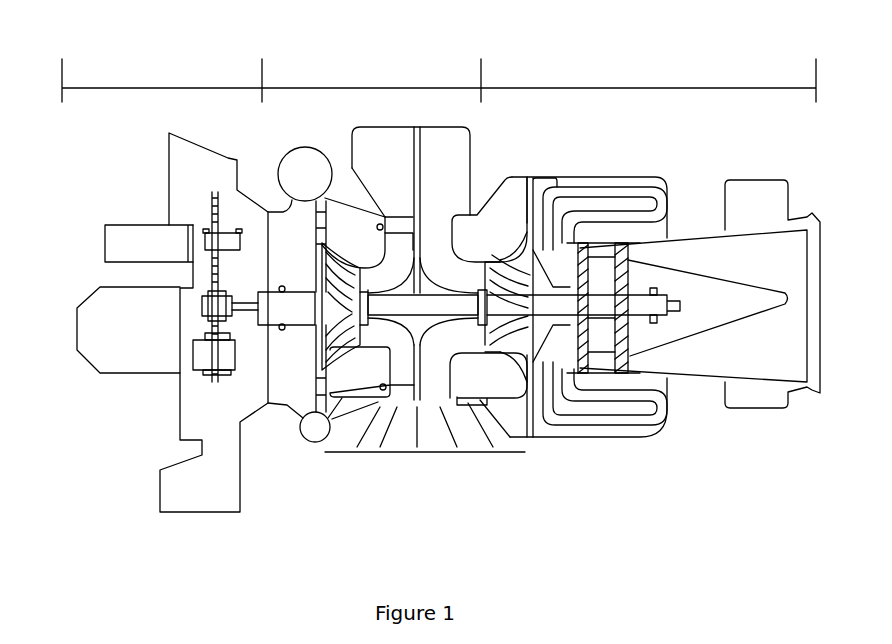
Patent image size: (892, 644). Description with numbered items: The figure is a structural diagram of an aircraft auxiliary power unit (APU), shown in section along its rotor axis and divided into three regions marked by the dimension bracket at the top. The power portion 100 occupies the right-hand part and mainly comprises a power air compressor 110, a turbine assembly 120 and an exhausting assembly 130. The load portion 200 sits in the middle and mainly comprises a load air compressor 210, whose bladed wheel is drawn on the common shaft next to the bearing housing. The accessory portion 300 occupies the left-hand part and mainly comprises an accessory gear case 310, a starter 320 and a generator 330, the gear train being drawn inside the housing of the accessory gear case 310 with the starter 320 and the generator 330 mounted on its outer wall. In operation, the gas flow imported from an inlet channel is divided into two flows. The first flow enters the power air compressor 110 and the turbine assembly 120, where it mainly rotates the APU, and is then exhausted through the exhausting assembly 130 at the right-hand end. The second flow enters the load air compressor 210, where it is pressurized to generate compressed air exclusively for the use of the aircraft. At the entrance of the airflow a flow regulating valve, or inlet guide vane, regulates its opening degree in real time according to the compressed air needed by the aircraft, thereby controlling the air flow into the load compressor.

The power portion 100 is at (652, 276).
The power air compressor 110 is at (536, 425).
The turbine assembly 120 is at (633, 365).
The exhausting assembly 130 is at (765, 392).
The load portion 200 is at (402, 282).
The load air compressor 210 is at (332, 363).
The accessory portion 300 is at (204, 291).
The accessory gear case 310 is at (197, 422).
The starter 320 is at (95, 348).
The generator 330 is at (105, 227).